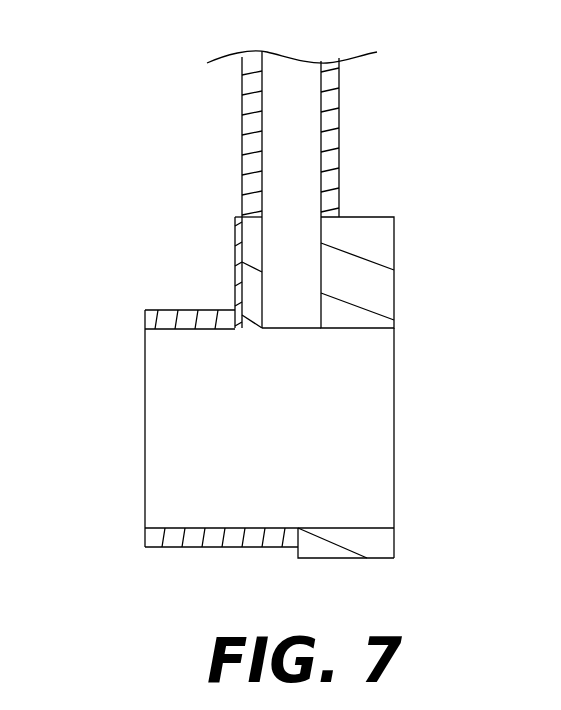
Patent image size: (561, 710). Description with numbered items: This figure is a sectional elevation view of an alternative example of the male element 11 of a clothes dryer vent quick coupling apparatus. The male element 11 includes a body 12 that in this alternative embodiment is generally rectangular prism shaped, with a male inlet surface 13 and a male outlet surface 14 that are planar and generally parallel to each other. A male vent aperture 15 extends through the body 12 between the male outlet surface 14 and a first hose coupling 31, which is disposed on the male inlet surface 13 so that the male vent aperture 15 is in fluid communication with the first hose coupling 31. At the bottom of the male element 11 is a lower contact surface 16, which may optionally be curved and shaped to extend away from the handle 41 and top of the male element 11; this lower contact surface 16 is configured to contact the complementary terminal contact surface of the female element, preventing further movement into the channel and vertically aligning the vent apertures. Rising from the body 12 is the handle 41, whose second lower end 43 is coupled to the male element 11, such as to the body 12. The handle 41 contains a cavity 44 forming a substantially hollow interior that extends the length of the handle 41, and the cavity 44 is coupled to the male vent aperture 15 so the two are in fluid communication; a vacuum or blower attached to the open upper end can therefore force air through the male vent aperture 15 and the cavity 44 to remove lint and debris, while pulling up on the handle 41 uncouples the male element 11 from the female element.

The male element 11 is at (93, 102).
The body 12 is at (240, 300).
The male inlet surface 13 is at (230, 253).
The male outlet surface 14 is at (398, 302).
The male vent aperture 15 is at (380, 422).
The lower contact surface 16 is at (343, 562).
The first hose coupling 31 is at (158, 316).
The handle 41 is at (242, 125).
The second lower end 43 is at (223, 162).
The cavity 44 is at (295, 208).